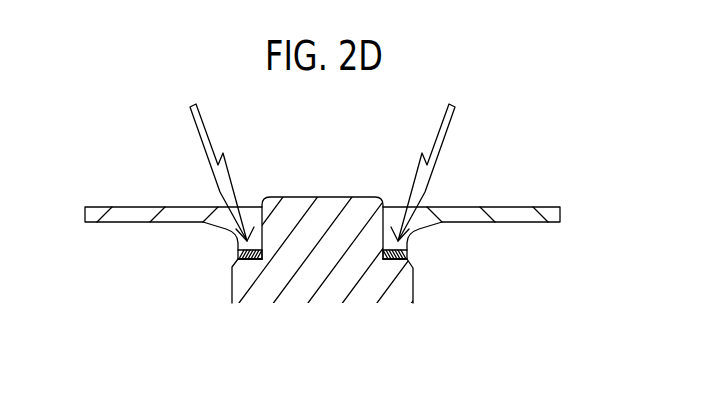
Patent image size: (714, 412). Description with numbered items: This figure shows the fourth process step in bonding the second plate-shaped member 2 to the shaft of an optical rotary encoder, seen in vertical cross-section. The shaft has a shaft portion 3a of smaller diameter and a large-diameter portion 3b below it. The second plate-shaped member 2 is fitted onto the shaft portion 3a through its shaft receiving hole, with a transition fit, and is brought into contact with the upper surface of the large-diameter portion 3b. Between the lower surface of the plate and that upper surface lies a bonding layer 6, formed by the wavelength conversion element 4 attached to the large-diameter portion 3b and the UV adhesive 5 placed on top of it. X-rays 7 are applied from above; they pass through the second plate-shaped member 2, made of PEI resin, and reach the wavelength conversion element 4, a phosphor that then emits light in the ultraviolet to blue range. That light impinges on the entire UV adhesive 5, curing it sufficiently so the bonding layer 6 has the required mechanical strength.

The second plate-shaped member 2 is at (545, 207).
The shaft portion 3a is at (298, 205).
The large-diameter portion 3b is at (265, 278).
The wavelength conversion element 4 is at (410, 259).
The UV adhesive 5 is at (408, 251).
The bonding layer 6 is at (391, 270).
The X-rays 7 is at (203, 140).